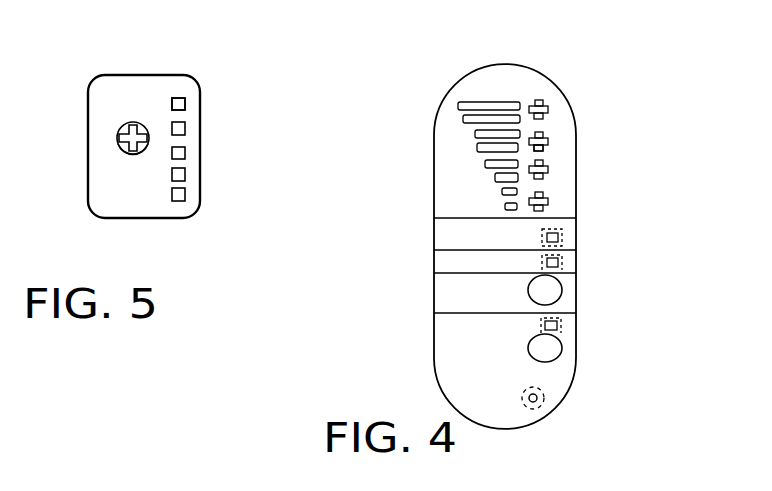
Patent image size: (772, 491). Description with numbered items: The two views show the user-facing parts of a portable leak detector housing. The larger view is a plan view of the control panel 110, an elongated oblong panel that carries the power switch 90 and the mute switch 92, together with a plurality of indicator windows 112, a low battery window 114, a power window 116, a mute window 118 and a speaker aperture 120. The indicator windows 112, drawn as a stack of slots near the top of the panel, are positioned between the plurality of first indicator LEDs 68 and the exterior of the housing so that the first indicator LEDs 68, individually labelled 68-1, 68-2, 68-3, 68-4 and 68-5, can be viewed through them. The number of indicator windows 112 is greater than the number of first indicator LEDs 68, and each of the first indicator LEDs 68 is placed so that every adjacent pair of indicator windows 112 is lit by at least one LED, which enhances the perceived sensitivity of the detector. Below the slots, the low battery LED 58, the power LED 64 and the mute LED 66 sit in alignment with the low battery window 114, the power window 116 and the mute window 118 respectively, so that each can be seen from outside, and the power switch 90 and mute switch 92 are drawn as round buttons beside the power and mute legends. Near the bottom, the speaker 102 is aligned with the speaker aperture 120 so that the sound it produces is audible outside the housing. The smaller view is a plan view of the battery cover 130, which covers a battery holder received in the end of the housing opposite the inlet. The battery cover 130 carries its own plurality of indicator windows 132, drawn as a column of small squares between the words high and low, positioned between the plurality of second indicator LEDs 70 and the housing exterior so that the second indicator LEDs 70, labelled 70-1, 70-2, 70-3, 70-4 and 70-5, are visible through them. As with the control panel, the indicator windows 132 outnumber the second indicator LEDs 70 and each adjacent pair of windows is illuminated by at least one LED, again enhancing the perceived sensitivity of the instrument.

In FIG. 4, the low battery LED 58 is at (565, 237).
In FIG. 4, the power LED 64 is at (565, 266).
In FIG. 4, the mute LED 66 is at (563, 328).
In FIG. 4, the first indicator LEDs 68 is at (690, 57).
In FIG. 4, the first indicator LED 68-1 is at (548, 202).
In FIG. 4, the first indicator LED 68-2 is at (548, 170).
In FIG. 4, the first indicator LED 68-3 is at (548, 157).
In FIG. 4, the first indicator LED 68-4 is at (548, 141).
In FIG. 4, the first indicator LED 68-5 is at (548, 110).
In FIG. 5, the second indicator LEDs 70 is at (300, 78).
In FIG. 5, the second indicator LED 70-1 is at (185, 197).
In FIG. 5, the second indicator LED 70-2 is at (185, 176).
In FIG. 5, the second indicator LED 70-3 is at (185, 153).
In FIG. 5, the second indicator LED 70-4 is at (185, 128).
In FIG. 5, the second indicator LED 70-5 is at (183, 110).
In FIG. 4, the power switch 90 is at (555, 292).
In FIG. 4, the mute switch 92 is at (552, 352).
In FIG. 4, the speaker 102 is at (552, 395).
In FIG. 4, the control panel 110 is at (433, 213).
In FIG. 4, the indicator windows 112 is at (538, 100).
In FIG. 4, the low battery window 114 is at (545, 245).
In FIG. 4, the power window 116 is at (545, 265).
In FIG. 4, the mute window 118 is at (543, 325).
In FIG. 4, the speaker aperture 120 is at (533, 404).
In FIG. 5, the battery cover 130 is at (152, 222).
In FIG. 5, the indicator windows 132 is at (187, 92).